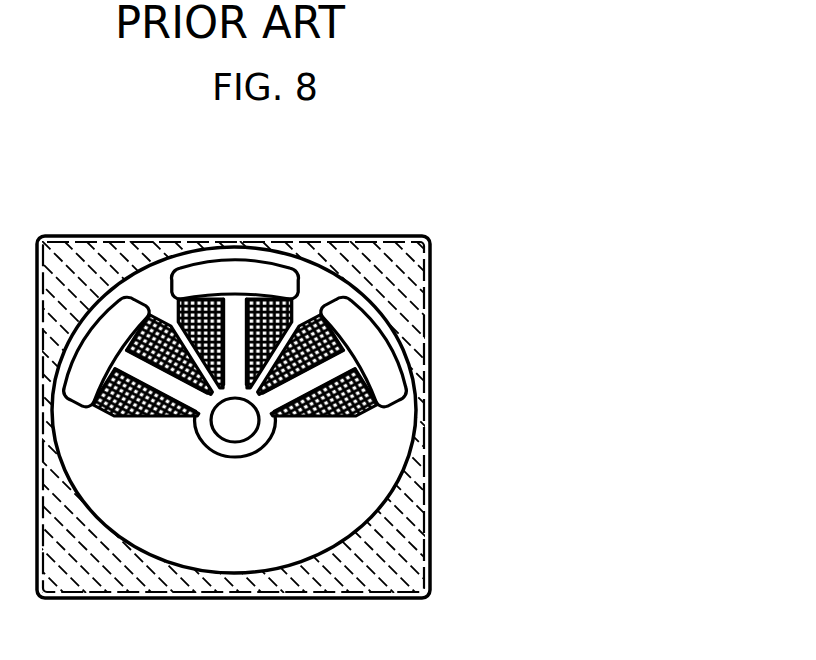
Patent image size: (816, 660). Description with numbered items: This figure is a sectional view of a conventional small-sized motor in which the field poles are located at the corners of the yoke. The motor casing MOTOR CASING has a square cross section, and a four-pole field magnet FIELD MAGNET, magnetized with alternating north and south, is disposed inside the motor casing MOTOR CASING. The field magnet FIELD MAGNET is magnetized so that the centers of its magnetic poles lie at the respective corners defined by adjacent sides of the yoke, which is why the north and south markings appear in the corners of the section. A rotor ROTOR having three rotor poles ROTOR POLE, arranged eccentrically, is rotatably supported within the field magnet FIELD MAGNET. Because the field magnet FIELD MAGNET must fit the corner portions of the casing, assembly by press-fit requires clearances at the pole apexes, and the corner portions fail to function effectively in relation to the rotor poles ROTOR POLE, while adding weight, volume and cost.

The motor casing MOTOR CASING is at (266, 236).
The field magnet FIELD MAGNET is at (398, 275).
The rotor pole ROTOR POLE is at (373, 362).
The rotor ROTOR is at (368, 410).